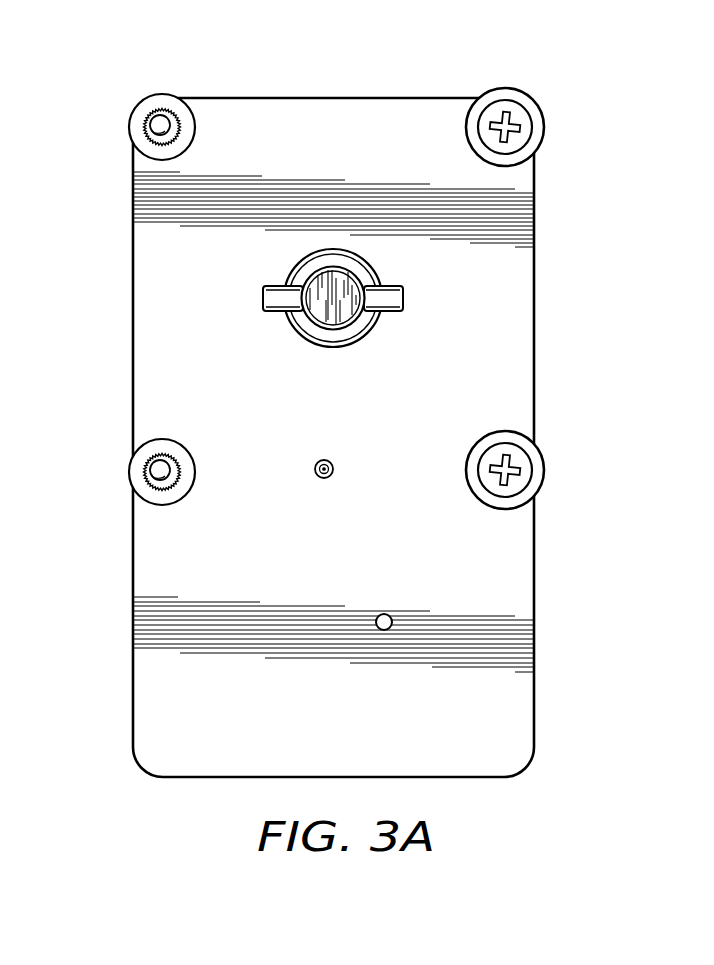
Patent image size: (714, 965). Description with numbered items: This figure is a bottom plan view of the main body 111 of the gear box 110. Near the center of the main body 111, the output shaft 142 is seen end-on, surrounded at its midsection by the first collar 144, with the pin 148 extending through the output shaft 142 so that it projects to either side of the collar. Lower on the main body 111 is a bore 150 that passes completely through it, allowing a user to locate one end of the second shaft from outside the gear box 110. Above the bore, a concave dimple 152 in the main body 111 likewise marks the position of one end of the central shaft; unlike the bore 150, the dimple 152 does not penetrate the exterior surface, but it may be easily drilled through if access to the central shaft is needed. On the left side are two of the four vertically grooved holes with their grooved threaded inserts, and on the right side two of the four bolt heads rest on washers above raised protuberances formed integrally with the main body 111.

The gear box 110 is at (116, 577).
The main body 111 is at (176, 778).
The output shaft 142 is at (320, 328).
The first collar 144 is at (315, 321).
The pin 148 is at (387, 312).
The bore 150 is at (382, 613).
The concave dimple 152 is at (338, 463).